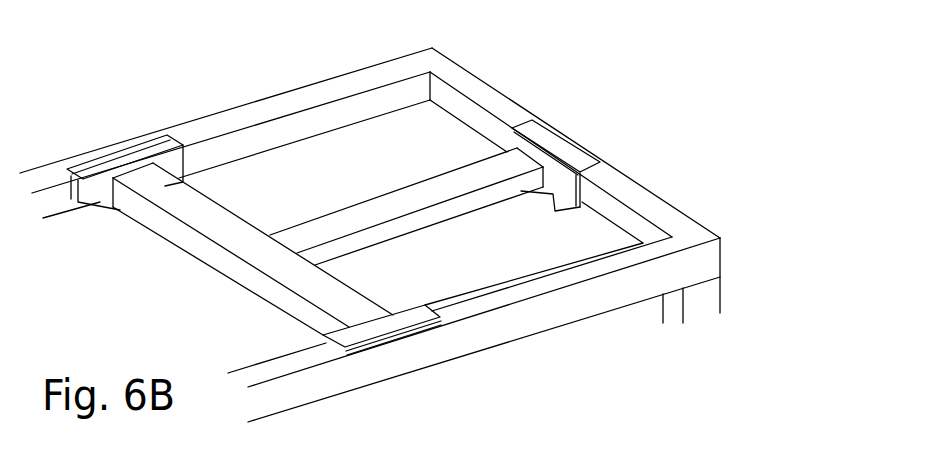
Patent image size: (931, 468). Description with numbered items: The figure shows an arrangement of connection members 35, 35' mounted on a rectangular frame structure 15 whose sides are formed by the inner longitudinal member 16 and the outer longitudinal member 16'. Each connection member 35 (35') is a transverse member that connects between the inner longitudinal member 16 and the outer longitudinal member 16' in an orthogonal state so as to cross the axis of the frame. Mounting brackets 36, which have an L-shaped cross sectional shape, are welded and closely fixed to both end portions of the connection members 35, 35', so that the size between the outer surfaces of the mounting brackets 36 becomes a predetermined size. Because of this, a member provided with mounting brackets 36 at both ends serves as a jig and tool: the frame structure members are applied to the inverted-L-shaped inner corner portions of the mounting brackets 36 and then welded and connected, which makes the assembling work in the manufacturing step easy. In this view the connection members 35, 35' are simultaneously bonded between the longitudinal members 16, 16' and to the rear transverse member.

The frame 15 is at (370, 218).
The inner longitudinal member 16 is at (226, 116).
The outer longitudinal member 16' is at (474, 329).
The connection member 35 is at (253, 249).
The connection member 35' is at (406, 195).
The mounting bracket 36 is at (140, 150).